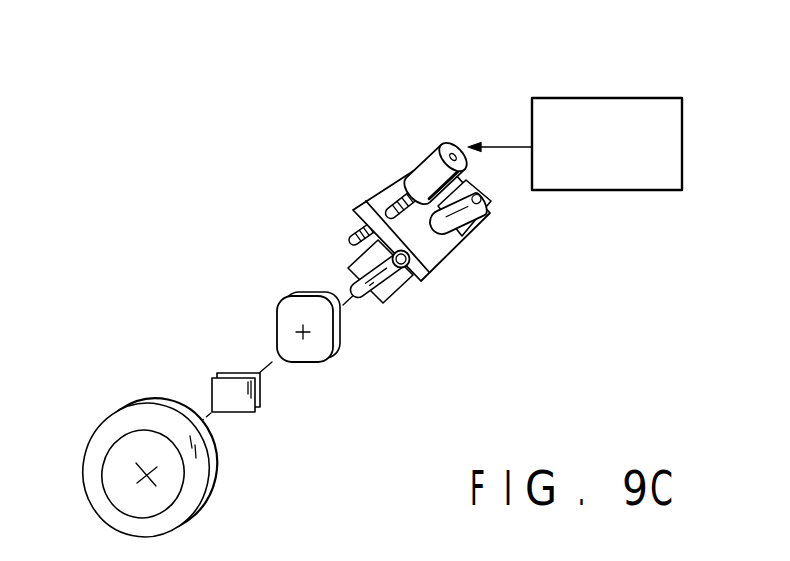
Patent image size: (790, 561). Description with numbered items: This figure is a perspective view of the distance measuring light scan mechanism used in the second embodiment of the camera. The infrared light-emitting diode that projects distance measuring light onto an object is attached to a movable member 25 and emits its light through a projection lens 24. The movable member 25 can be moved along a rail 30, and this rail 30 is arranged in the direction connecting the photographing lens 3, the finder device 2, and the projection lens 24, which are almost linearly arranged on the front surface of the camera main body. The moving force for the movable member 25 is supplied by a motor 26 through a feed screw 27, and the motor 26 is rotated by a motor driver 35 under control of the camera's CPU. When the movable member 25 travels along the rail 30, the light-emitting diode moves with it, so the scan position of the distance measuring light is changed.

The finder device 2 is at (258, 395).
The photographing lens 3 is at (173, 478).
The projection lens 24 is at (322, 346).
The movable member 25 is at (442, 251).
The motor 26 is at (432, 151).
The feed screw 27 is at (357, 229).
The rail 30 is at (463, 216).
The motor driver 35 is at (633, 98).